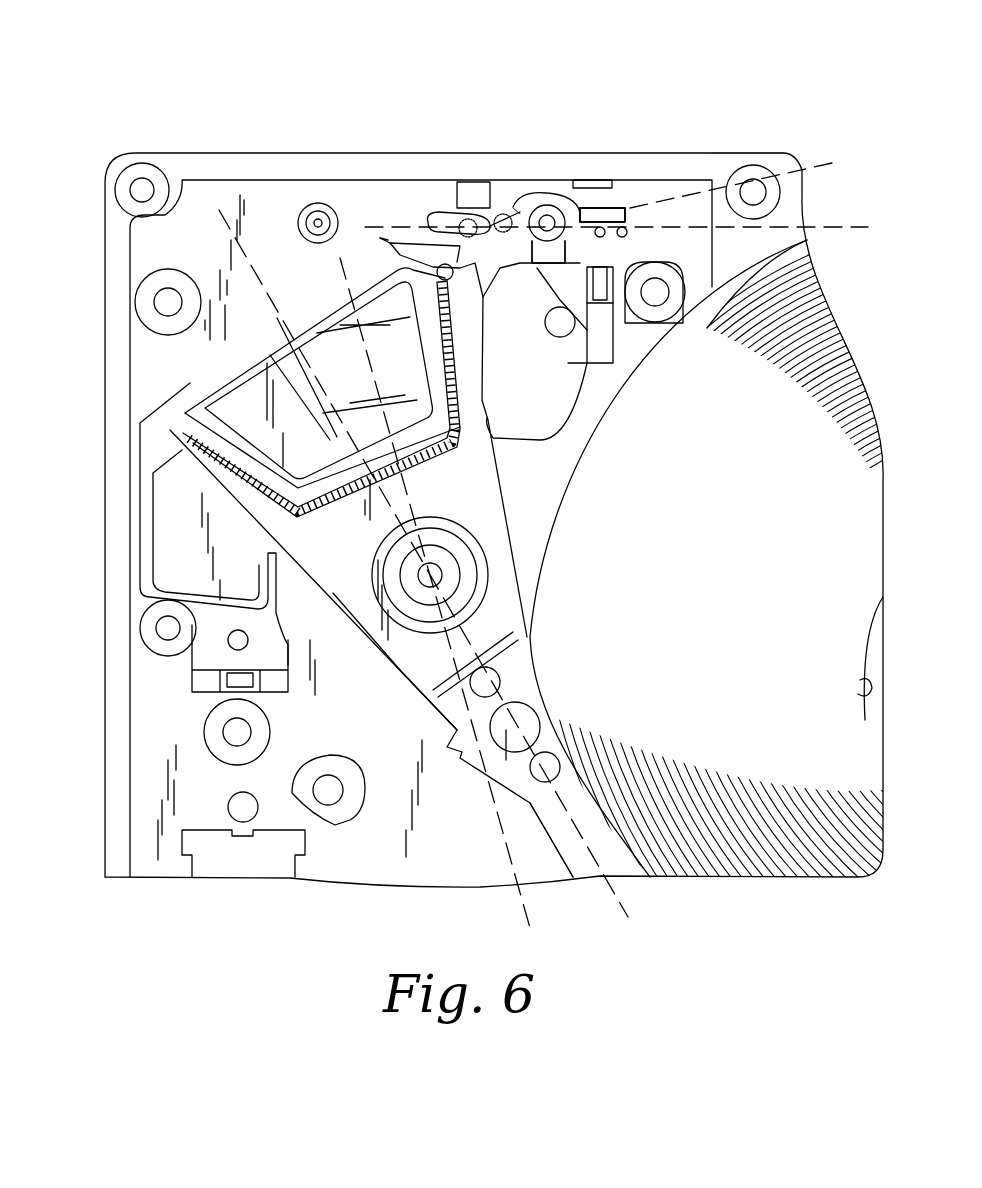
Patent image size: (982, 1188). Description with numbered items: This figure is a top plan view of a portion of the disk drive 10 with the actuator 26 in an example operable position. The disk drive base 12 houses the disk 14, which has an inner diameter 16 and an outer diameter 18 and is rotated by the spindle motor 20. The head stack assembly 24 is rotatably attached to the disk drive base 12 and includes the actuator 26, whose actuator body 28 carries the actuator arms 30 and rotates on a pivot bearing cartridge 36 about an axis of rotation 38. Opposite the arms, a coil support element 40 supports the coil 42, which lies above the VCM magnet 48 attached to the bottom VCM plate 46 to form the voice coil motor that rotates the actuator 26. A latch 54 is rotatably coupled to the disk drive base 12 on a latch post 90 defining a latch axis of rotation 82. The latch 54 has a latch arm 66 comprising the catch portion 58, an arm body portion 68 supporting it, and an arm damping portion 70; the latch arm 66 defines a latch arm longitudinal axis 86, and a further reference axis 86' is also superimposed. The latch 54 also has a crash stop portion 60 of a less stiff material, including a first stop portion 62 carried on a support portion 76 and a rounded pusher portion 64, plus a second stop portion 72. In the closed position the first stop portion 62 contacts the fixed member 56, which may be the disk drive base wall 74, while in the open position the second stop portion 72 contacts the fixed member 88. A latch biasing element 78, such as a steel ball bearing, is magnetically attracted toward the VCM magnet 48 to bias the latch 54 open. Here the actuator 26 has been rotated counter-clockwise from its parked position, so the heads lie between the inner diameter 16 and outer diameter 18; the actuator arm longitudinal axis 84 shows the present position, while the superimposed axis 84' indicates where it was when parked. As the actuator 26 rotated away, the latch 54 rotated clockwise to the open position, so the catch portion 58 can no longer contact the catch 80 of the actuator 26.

The disk drive 10 is at (303, 84).
The disk drive base 12 is at (120, 640).
The disk 14 is at (816, 541).
The inner diameter 16 is at (862, 688).
The outer diameter 18 is at (563, 498).
The spindle motor 20 is at (862, 638).
The head stack assembly 24 is at (345, 595).
The actuator 26 is at (372, 622).
The actuator body 28 is at (398, 648).
The actuator arm 30 is at (572, 862).
The pivot bearing cartridge 36 is at (468, 592).
The axis of rotation 38 is at (437, 573).
The coil support element 40 is at (197, 470).
The coil 42 is at (195, 402).
The bottom VCM plate 46 is at (553, 383).
The VCM magnet 48 is at (165, 563).
The latch 54 is at (540, 200).
The fixed member 56 is at (598, 186).
The catch portion 58 is at (428, 218).
The crash stop portion 60 is at (625, 228).
The first stop portion 62 is at (610, 210).
The pusher portion 64 is at (532, 255).
The latch arm 66 is at (513, 210).
The arm body portion 68 is at (516, 211).
The arm damping portion 70 is at (502, 213).
The second stop portion 72 is at (462, 212).
The disk drive base wall 74 is at (680, 162).
The support portion 76 is at (652, 293).
The latch biasing element 78 is at (613, 237).
The catch 80 is at (388, 240).
The latch axis of rotation 82 is at (560, 220).
The actuator arm longitudinal axis 84 is at (451, 565).
The actuator arm longitudinal axis 84' is at (436, 596).
The latch arm longitudinal axis 86 is at (616, 206).
The reference line (alternate) 86' is at (742, 168).
The fixed member 88 is at (473, 185).
The latch post 90 is at (548, 220).